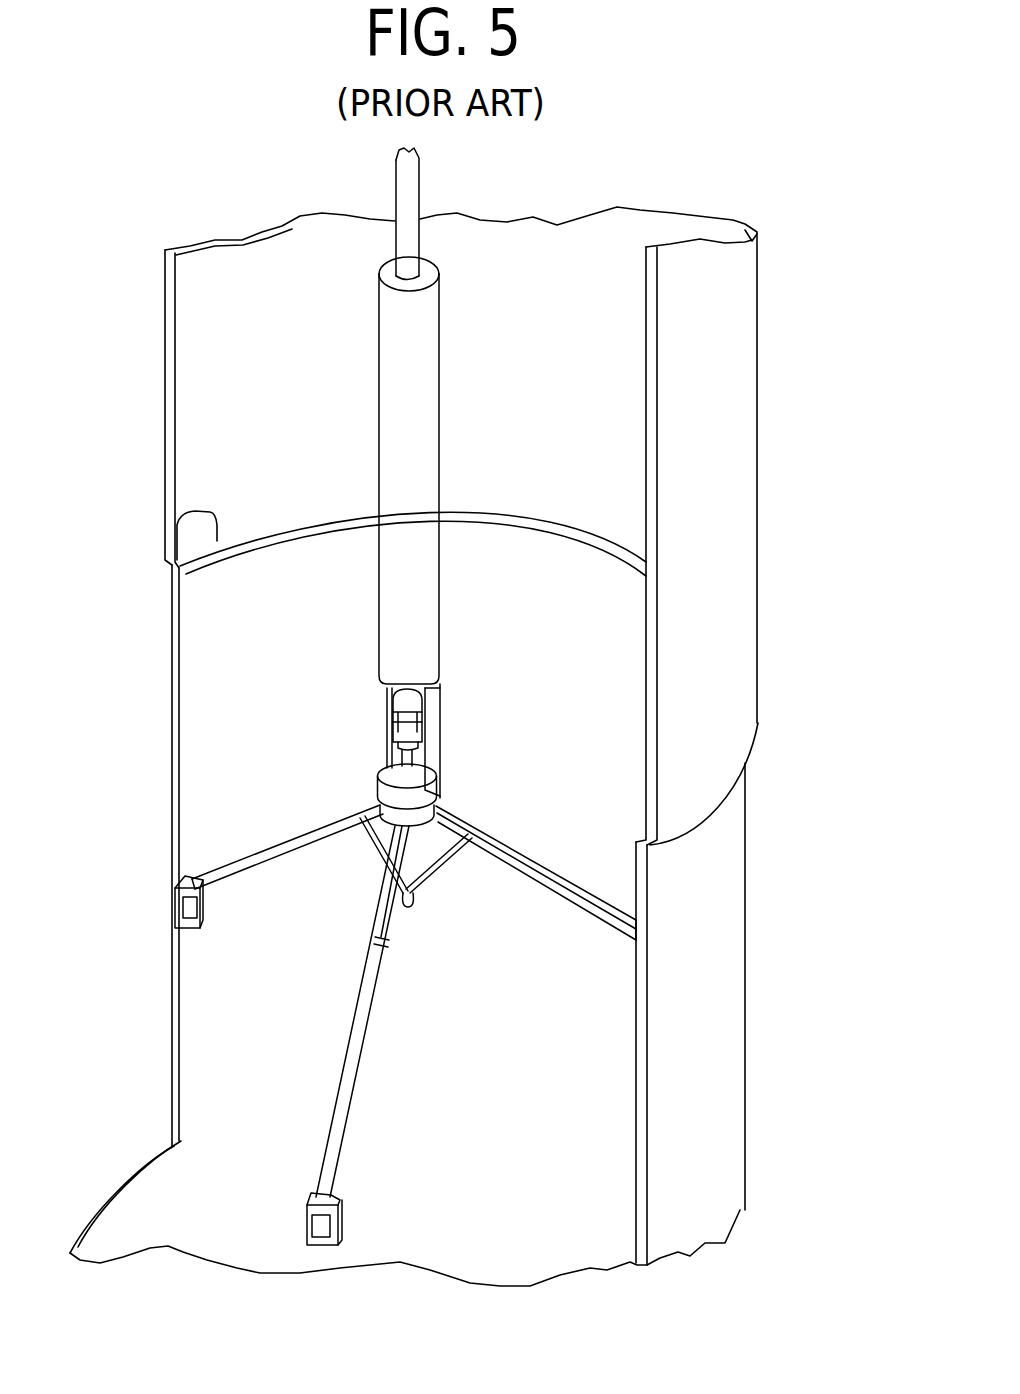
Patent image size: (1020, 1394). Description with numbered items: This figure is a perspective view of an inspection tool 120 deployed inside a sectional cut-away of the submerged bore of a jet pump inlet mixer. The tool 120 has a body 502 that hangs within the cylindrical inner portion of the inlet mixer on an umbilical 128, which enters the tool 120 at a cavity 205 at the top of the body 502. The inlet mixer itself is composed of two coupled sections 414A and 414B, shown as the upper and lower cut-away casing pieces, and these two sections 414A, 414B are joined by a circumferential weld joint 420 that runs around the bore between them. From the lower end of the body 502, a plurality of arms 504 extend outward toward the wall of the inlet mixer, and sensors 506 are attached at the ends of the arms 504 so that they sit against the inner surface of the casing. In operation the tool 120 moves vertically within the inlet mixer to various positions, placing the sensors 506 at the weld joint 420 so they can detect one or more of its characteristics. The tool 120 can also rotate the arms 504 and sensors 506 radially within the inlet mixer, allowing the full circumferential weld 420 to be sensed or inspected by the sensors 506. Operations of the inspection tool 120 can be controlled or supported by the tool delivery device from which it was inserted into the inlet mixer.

The tool 120 is at (348, 662).
The umbilical 128 is at (420, 182).
The cavity 205 is at (432, 272).
The section 414A is at (758, 370).
The section 414B is at (745, 1000).
The circumferential weld joint 420 is at (178, 520).
The body 502 is at (440, 393).
The arms 504 is at (378, 912).
The sensors 506 is at (172, 899).